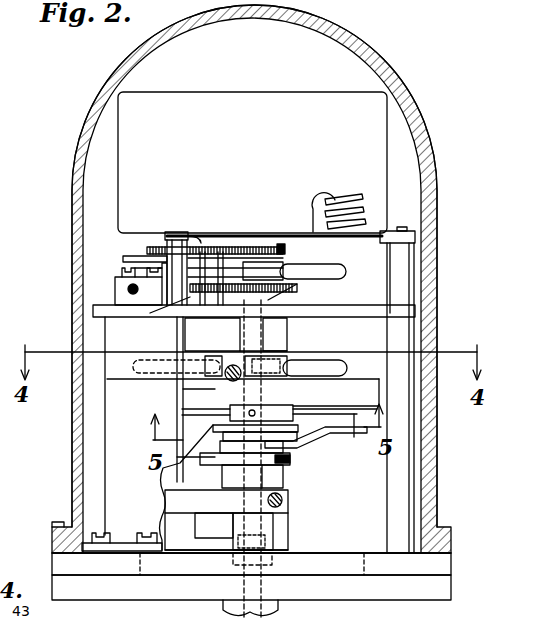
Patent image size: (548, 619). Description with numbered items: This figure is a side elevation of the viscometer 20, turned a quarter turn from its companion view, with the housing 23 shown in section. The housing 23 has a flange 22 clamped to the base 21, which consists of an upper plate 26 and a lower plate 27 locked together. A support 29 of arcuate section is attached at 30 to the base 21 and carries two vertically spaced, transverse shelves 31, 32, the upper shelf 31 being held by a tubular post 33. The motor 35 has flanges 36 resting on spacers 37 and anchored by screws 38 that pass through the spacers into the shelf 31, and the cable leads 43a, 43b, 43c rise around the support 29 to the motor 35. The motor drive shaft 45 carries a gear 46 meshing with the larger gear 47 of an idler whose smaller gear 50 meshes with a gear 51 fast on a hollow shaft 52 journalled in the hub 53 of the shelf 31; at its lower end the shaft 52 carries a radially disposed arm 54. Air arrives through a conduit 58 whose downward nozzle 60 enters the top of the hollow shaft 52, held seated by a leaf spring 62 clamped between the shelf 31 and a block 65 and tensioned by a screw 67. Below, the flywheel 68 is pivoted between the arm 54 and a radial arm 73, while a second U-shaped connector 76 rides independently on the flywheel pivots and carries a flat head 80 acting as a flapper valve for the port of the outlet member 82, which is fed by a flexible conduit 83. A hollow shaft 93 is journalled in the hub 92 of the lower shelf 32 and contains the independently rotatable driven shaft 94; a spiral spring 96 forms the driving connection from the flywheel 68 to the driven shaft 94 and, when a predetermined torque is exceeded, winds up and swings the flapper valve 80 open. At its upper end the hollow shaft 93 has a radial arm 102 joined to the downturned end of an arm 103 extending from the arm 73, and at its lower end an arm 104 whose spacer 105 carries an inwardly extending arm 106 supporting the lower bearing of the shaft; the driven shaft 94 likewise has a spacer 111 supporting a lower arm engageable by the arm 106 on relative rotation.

The viscometer 20 is at (70, 455).
The base 21 is at (52, 566).
The flange 22 is at (55, 535).
The housing 23 is at (88, 127).
The upper plate 26 is at (450, 567).
The lower plate 27 is at (450, 592).
The support 29 is at (110, 414).
The attachment 30 is at (100, 532).
The shelf 31 is at (388, 306).
The shelf 32 is at (292, 463).
The tubular post 33 is at (405, 500).
The motor 35 is at (233, 88).
The flanges 36 is at (194, 235).
The spacers 37 is at (172, 258).
The screws 38 is at (176, 231).
The cable lead 43a is at (345, 204).
The cable lead 43b is at (350, 215).
The cable lead 43c is at (355, 227).
The drive shaft 45 is at (258, 240).
The gear 46 is at (287, 249).
The larger gear 47 is at (148, 250).
The smaller gear 50 is at (172, 306).
The gear 51 is at (300, 285).
The hollow shaft 52 is at (283, 335).
The hub 53 is at (238, 339).
The radially disposed arm 54 is at (287, 361).
The conduit 58 is at (332, 271).
The nozzle 60 is at (268, 262).
The leaf spring 62 is at (232, 246).
The block 65 is at (118, 298).
The screw 67 is at (128, 288).
The flywheel 68 is at (183, 389).
The radial arm 73 is at (290, 411).
The second U-shaped connector 76 is at (186, 412).
The flat head 80 is at (260, 378).
The outlet member 82 is at (234, 382).
The flexible conduit 83 is at (347, 368).
The hub 92 is at (283, 492).
The hollow shaft 93 is at (245, 476).
The driven shaft 94 is at (272, 522).
The spiral spring 96 is at (180, 463).
The radial arm 102 is at (317, 434).
The arm 103 is at (354, 437).
The arm 104 is at (182, 499).
The spacer 105 is at (178, 524).
The arm 106 is at (212, 543).
The spacer 111 is at (272, 542).